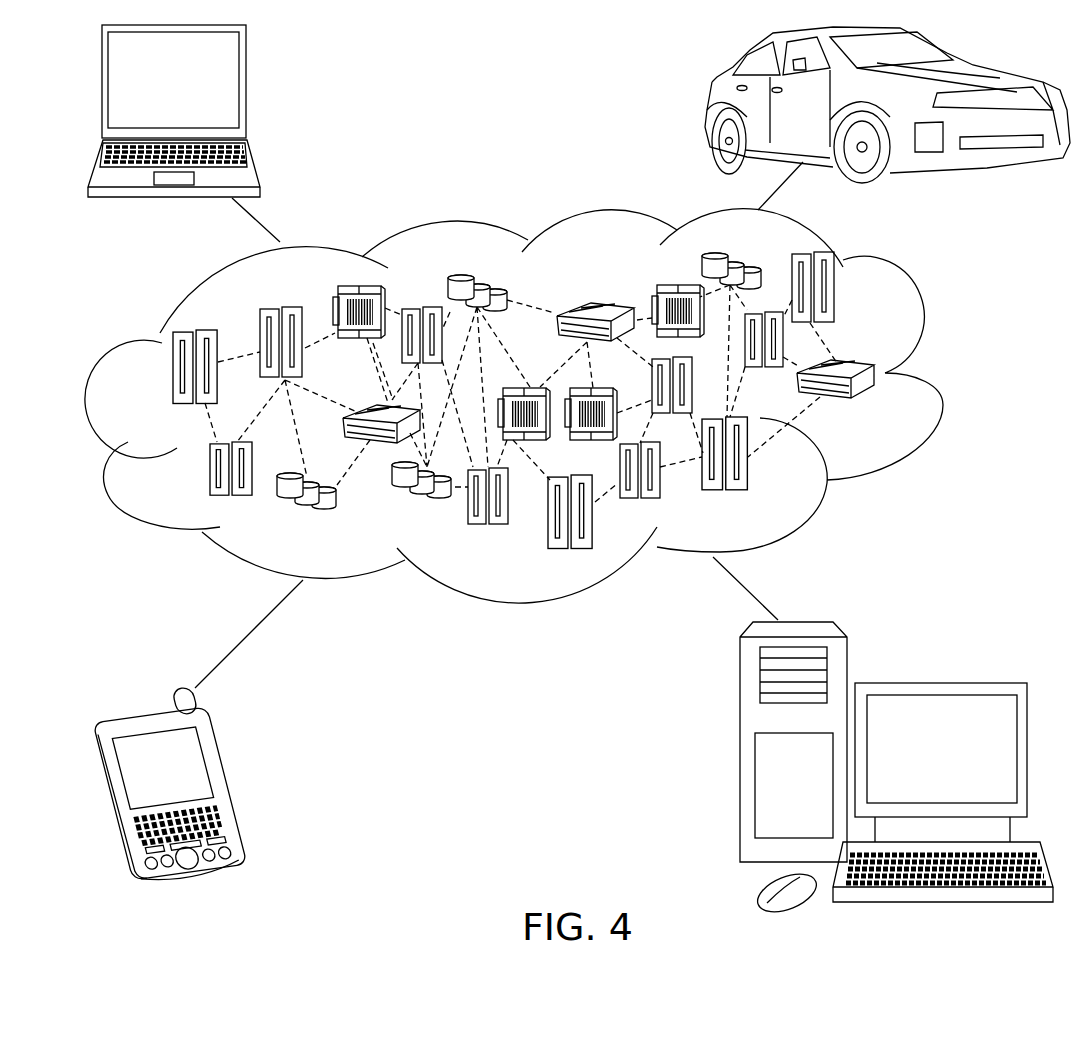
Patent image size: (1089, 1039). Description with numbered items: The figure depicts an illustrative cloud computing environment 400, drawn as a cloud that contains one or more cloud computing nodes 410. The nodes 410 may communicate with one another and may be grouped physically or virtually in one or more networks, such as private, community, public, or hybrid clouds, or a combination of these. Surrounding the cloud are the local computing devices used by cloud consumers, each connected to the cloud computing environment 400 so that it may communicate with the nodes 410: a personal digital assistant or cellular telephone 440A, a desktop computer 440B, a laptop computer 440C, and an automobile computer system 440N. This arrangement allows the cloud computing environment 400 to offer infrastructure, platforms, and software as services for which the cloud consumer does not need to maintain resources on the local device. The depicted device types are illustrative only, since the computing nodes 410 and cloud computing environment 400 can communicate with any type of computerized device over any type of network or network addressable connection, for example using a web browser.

The cloud computing environment 400 is at (885, 373).
The cloud computing nodes 410 is at (880, 410).
The personal digital assistant (PDA) or cellular telephone 440A is at (237, 782).
The desktop computer 440B is at (938, 683).
The laptop computer 440C is at (247, 88).
The automobile computer system 440N is at (710, 107).